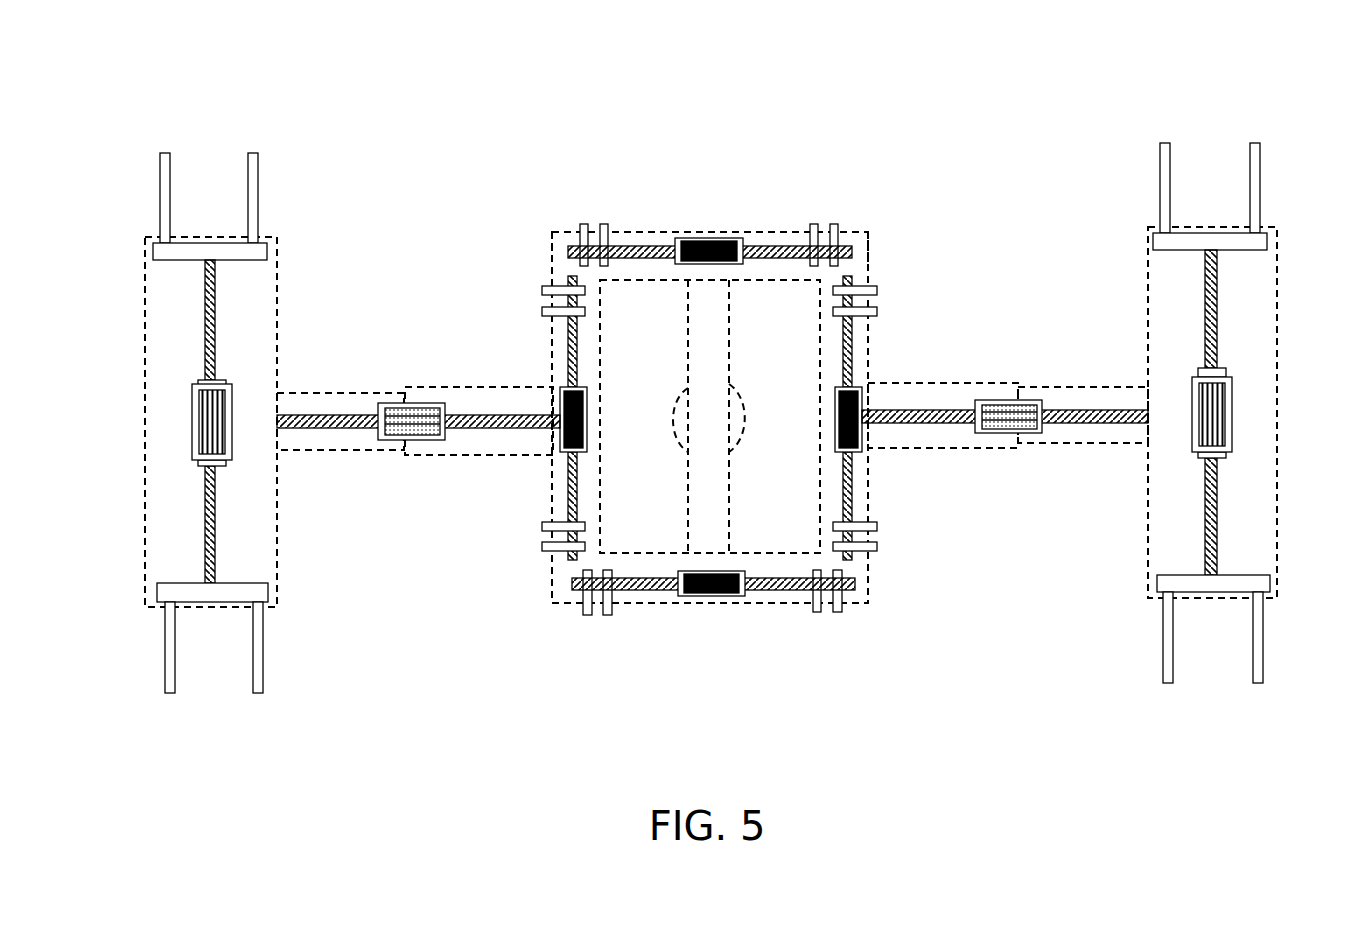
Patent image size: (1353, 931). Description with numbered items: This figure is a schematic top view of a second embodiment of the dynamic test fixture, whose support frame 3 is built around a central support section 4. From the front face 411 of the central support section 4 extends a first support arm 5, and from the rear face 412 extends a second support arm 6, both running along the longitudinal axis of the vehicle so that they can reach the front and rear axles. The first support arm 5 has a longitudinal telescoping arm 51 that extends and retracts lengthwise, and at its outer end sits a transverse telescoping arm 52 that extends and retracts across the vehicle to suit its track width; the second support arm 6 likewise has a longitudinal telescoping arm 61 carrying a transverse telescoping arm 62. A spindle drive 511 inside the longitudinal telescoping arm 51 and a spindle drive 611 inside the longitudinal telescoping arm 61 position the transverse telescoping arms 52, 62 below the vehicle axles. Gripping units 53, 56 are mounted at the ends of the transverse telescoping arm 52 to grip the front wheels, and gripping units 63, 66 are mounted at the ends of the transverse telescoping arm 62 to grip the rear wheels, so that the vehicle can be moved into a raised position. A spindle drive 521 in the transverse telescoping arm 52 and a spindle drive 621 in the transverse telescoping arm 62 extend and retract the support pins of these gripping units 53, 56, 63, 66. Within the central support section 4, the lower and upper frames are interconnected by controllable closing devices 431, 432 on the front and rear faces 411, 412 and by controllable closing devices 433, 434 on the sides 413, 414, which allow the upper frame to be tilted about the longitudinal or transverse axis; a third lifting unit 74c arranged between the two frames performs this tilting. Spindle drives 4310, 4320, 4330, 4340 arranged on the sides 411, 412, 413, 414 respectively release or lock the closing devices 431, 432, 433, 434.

The support frame 3 is at (117, 96).
The central support section 4 is at (660, 668).
The first support arm 5 is at (1099, 412).
The second support arm 6 is at (325, 423).
The longitudinal telescoping arm 51 is at (1005, 438).
The transverse telescoping arm 52 is at (1217, 412).
The gripping unit 53 is at (1213, 665).
The gripping unit 56 is at (1209, 163).
The longitudinal telescoping arm 61 is at (418, 447).
The transverse telescoping arm 62 is at (211, 423).
The gripping unit 63 is at (213, 672).
The gripping unit 66 is at (206, 172).
The third lifting unit 74c is at (673, 428).
The front face 411 is at (880, 250).
The rear face 412 is at (540, 250).
The side 413 is at (855, 606).
The side 414 is at (567, 232).
The controllable closing device 431 is at (878, 292).
The controllable closing device 432 is at (545, 292).
The controllable closing device 433 is at (728, 640).
The controllable closing device 434 is at (694, 186).
The spindle drive 511 is at (1005, 434).
The spindle drive 521 is at (1228, 420).
The spindle drive 611 is at (395, 441).
The spindle drive 621 is at (192, 420).
The spindle drive 4310 is at (870, 395).
The spindle drive 4320 is at (560, 400).
The spindle drive 4330 is at (711, 614).
The spindle drive 4340 is at (709, 221).